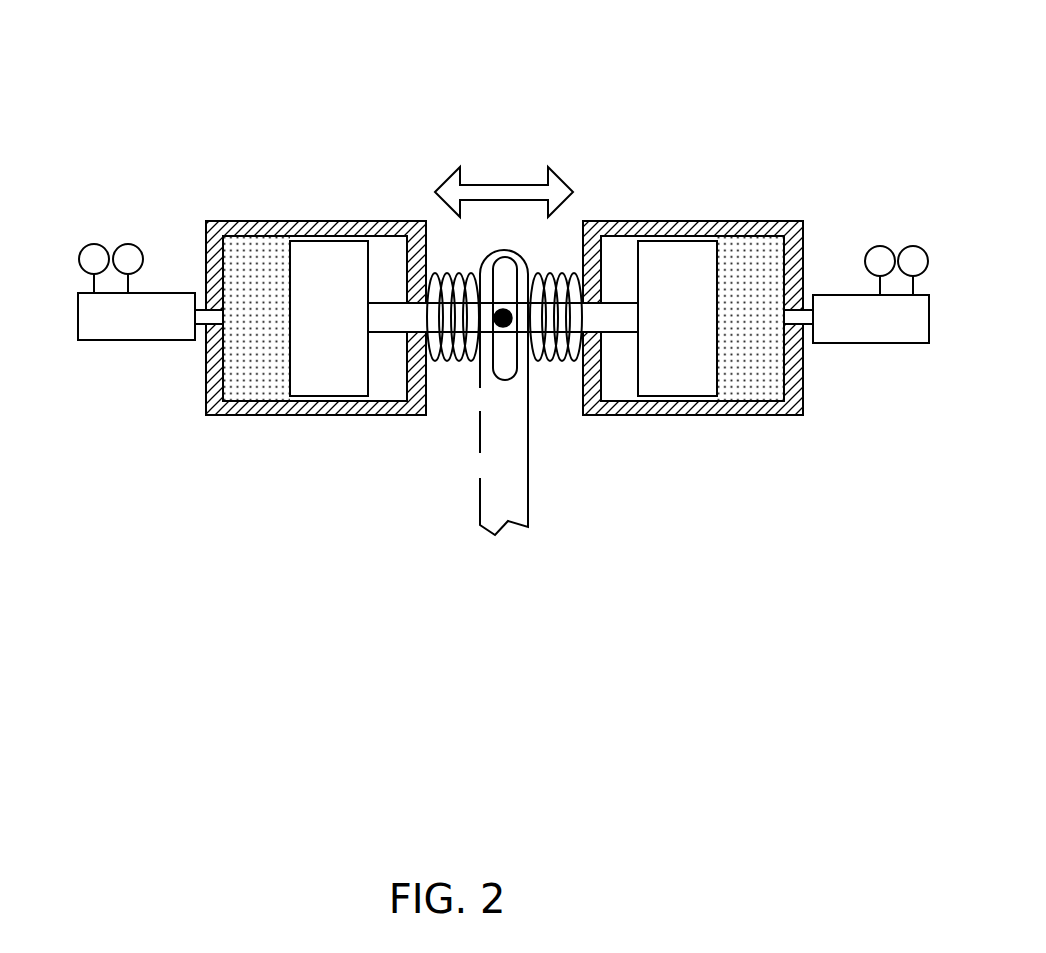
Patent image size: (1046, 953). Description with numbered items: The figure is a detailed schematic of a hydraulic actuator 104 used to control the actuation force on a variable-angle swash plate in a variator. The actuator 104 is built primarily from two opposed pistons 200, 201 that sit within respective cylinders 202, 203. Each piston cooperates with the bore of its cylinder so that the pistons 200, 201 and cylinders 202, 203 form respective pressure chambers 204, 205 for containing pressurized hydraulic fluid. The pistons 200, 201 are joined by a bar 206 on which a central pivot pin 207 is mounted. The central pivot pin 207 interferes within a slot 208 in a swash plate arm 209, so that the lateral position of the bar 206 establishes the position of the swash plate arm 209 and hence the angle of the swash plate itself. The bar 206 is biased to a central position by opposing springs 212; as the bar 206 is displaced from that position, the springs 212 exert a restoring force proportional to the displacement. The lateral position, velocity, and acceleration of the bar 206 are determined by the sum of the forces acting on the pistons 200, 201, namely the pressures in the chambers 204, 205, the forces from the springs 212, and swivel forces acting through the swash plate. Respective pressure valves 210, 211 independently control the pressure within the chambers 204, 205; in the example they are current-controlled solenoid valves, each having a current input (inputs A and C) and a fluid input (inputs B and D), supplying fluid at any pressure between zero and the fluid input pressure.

The hydraulic actuator 104 is at (600, 97).
The piston 200 is at (346, 246).
The piston 201 is at (675, 253).
The cylinder 202 is at (287, 221).
The cylinder 203 is at (745, 225).
The pressure chamber 204 is at (259, 380).
The pressure chamber 205 is at (743, 387).
The bar 206 is at (402, 310).
The central pivot pin 207 is at (501, 327).
The slot 208 is at (502, 378).
The swash plate arm 209 is at (496, 487).
The pressure valve 210 is at (140, 327).
The pressure valve 211 is at (867, 328).
The springs 212 is at (548, 360).